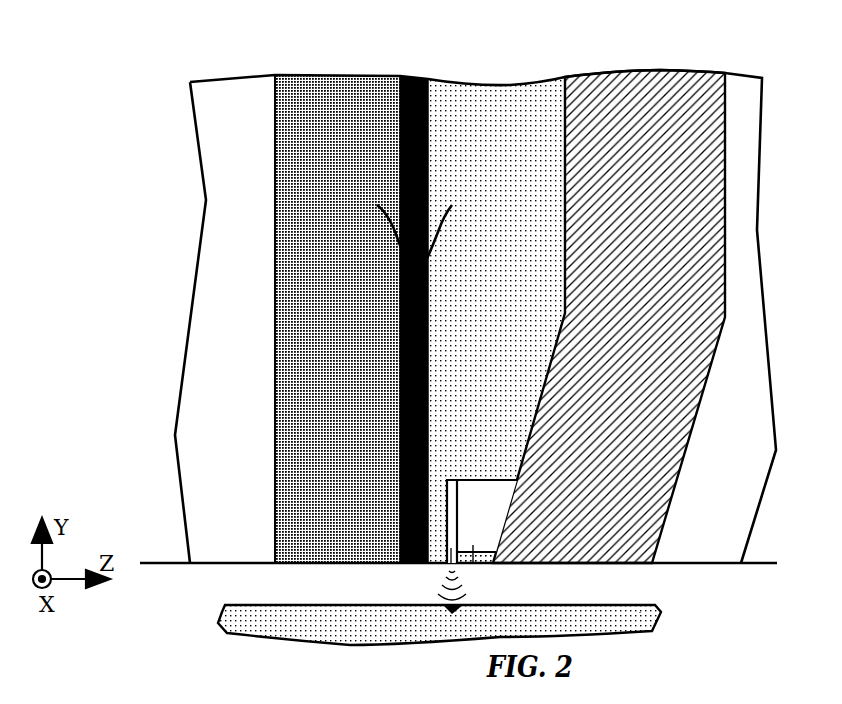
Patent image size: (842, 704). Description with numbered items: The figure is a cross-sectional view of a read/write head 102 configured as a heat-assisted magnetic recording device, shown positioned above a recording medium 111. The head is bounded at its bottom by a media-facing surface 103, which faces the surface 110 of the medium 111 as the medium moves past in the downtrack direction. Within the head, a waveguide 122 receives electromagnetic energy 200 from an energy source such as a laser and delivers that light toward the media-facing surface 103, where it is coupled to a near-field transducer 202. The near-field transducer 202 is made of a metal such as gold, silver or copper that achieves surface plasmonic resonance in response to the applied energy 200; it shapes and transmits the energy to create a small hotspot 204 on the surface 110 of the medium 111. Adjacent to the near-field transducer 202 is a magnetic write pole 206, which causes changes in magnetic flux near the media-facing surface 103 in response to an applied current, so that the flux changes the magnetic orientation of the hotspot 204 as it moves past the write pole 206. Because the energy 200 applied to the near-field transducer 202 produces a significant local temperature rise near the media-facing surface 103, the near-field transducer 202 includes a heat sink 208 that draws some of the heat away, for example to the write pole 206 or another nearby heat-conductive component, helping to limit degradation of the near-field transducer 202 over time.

The read/write head 102 is at (170, 46).
The media-facing surface 103 is at (763, 566).
The surface of medium 110 is at (610, 620).
The recording medium 111 is at (640, 612).
The waveguide 122 is at (557, 50).
The electromagnetic energy 200 is at (399, 235).
The near-field transducer 202 is at (447, 571).
The hotspot 204 is at (452, 614).
The magnetic write pole 206 is at (656, 70).
The heat sink 208 is at (473, 563).